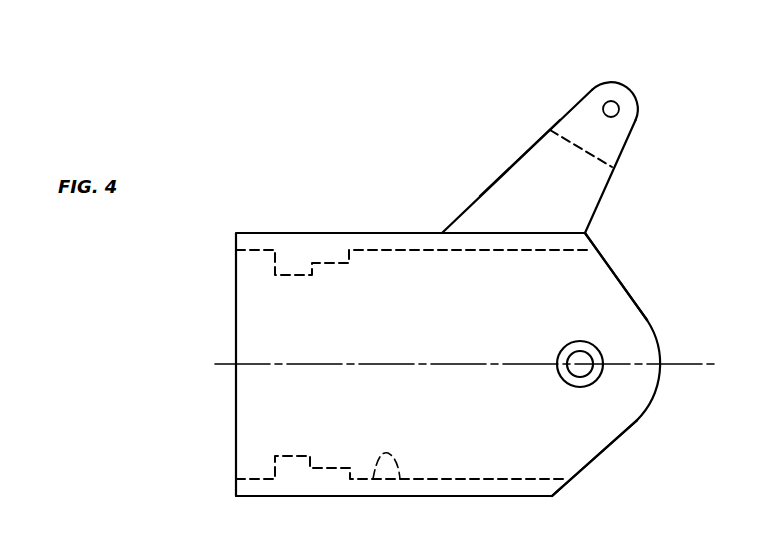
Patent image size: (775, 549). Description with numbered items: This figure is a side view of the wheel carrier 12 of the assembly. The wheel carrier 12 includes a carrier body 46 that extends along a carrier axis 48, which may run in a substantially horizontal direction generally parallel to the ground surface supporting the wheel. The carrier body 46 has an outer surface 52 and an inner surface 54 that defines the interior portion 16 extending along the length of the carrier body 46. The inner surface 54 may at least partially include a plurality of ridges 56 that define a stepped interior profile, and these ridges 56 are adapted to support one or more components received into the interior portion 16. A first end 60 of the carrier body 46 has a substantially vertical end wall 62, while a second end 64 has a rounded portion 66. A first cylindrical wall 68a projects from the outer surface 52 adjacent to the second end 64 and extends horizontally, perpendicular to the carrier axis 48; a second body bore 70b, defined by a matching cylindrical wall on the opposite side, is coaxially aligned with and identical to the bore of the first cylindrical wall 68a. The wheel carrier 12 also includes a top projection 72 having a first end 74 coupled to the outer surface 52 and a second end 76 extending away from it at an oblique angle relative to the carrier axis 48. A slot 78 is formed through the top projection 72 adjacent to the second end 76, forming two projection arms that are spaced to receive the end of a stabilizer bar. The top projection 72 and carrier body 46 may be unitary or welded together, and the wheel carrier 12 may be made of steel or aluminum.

The wheel carrier 12 is at (647, 185).
The interior portion 16 is at (538, 457).
The carrier body 46 is at (592, 273).
The carrier axis 48 is at (672, 364).
The outer surface 52 is at (412, 497).
The inner surface 54 is at (374, 480).
The plurality of ridges 56 is at (283, 456).
The first end 60 is at (248, 227).
The end wall 62 is at (236, 243).
The second end 64 is at (558, 507).
The rounded portion 66 is at (638, 422).
The first cylindrical wall 68a is at (580, 342).
The second body bore 70b is at (587, 351).
The top projection 72 is at (523, 170).
The first end 74 is at (464, 188).
The second end 76 is at (648, 92).
The slot 78 is at (610, 143).